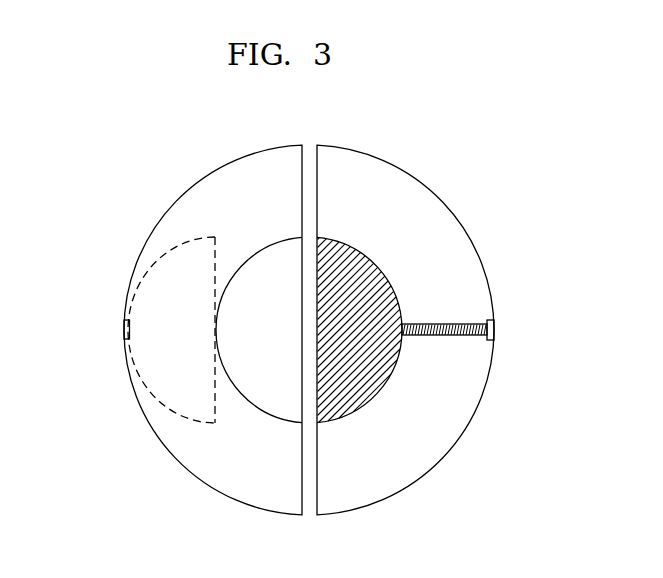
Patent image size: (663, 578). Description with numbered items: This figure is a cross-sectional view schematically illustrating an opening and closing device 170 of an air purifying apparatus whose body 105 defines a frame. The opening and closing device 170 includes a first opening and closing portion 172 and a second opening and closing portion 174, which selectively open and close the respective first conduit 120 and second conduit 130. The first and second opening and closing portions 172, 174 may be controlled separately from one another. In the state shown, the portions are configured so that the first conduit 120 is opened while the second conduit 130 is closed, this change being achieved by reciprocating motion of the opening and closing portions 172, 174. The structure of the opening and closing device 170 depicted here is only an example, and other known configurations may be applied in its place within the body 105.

The body 105 is at (470, 232).
The first conduit 120 is at (265, 269).
The second conduit 130 is at (369, 257).
The opening and closing device 170 is at (78, 212).
The first opening and closing portion 172 is at (136, 292).
The second opening and closing portion 174 is at (333, 343).